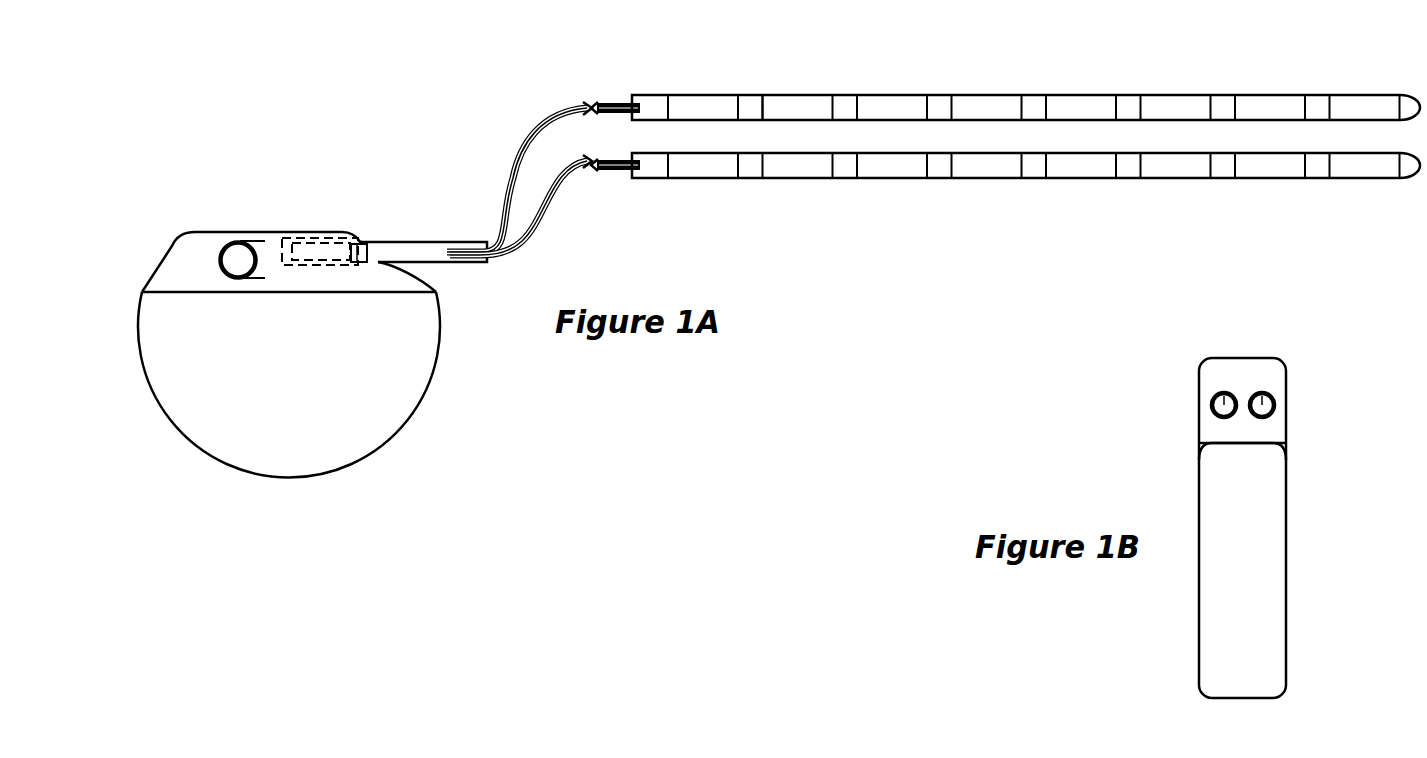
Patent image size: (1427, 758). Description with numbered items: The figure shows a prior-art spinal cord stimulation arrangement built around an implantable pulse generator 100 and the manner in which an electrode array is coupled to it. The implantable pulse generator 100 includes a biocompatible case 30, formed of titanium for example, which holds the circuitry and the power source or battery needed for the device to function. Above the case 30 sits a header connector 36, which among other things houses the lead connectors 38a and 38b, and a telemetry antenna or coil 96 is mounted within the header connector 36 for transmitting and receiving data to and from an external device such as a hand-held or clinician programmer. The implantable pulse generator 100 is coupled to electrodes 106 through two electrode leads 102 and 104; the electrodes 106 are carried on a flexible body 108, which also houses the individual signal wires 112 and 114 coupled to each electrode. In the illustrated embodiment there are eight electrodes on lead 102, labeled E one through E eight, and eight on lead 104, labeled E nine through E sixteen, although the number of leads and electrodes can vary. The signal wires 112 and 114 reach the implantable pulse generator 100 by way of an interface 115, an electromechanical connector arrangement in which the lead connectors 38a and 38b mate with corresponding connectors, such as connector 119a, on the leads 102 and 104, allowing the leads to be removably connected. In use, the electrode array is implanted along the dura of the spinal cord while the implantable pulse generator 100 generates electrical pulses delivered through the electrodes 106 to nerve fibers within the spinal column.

In FIG. 1A, the implantable pulse generator 100 is at (244, 134).
In FIG. 1B, the implantable pulse generator 100 is at (1241, 337).
In FIG. 1A, the case 30 is at (437, 352).
In FIG. 1B, the case 30 is at (1287, 480).
In FIG. 1A, the header connector 36 is at (175, 248).
In FIG. 1B, the header connector 36 is at (1287, 420).
In FIG. 1A, the lead connector 38a is at (312, 238).
In FIG. 1B, the lead connector 38a is at (1222, 392).
In FIG. 1B, the lead connector 38b is at (1262, 392).
In FIG. 1A, the telemetry antenna or coil 96 is at (241, 238).
In FIG. 1A, the electrode lead 102 is at (1005, 81).
In FIG. 1A, the electrode lead 104 is at (731, 204).
In FIG. 1A, the electrode 106 is at (893, 95).
In FIG. 1A, the flexible body 108 is at (749, 95).
In FIG. 1A, the signal wire 112 is at (530, 108).
In FIG. 1A, the signal wire 114 is at (572, 185).
In FIG. 1A, the interface 115 is at (341, 207).
In FIG. 1A, the connector 119a is at (355, 240).